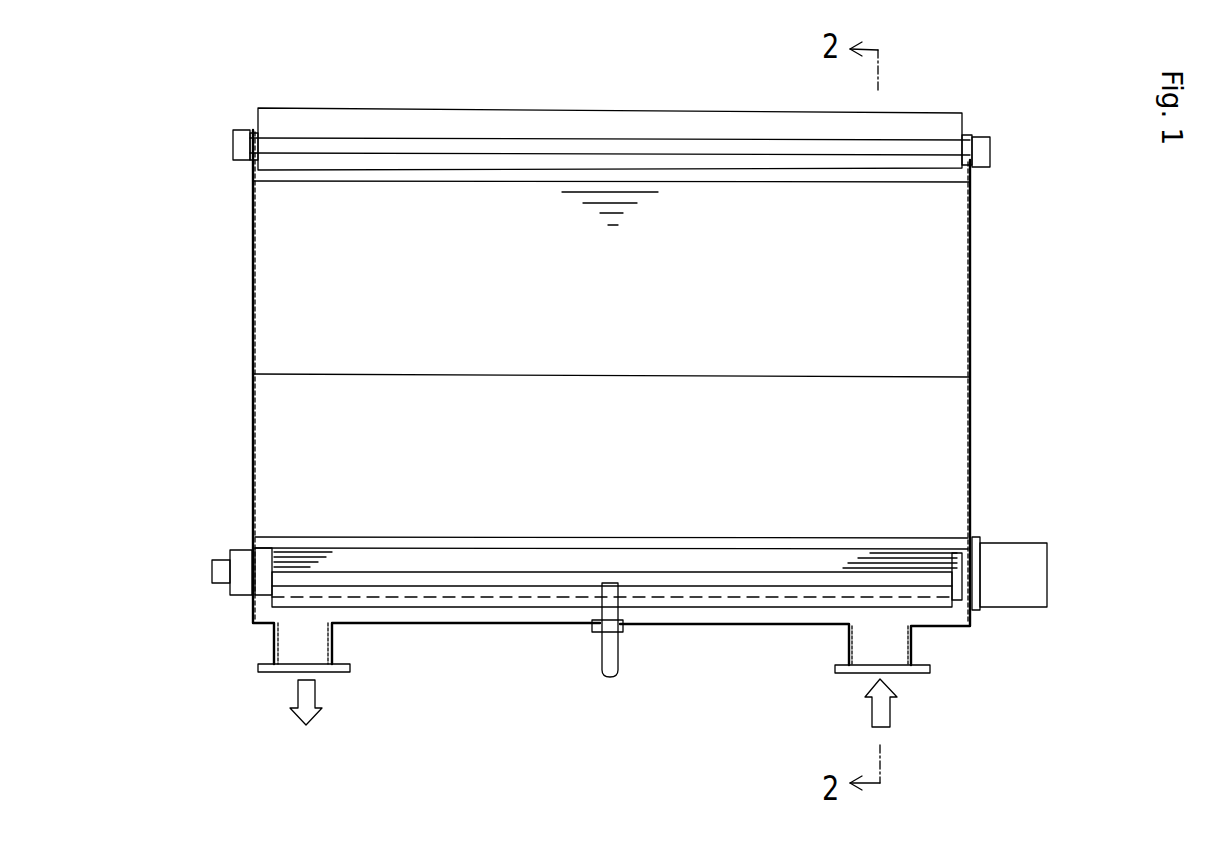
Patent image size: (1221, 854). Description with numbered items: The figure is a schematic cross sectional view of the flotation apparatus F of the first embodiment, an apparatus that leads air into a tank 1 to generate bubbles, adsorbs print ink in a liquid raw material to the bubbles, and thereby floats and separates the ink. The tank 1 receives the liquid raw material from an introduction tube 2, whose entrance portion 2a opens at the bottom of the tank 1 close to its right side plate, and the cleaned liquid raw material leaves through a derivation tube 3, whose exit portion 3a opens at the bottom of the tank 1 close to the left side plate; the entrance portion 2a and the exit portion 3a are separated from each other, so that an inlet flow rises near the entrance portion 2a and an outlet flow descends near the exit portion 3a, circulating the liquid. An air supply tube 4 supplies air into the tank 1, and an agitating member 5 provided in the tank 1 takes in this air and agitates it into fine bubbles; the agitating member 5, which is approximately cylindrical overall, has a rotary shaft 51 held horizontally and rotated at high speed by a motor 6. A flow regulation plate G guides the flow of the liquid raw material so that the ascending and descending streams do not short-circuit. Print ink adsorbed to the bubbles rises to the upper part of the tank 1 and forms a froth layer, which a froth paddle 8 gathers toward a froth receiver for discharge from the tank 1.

The tank 1 is at (970, 295).
The introduction tube 2 is at (917, 648).
The entrance portion 2a is at (870, 645).
The derivation tube 3 is at (272, 645).
The exit portion 3a is at (313, 640).
The air supply tube 4 is at (615, 658).
The agitating member 5 is at (880, 553).
The rotary shaft 51 is at (947, 550).
The motor 6 is at (1018, 557).
The froth paddle 8 is at (368, 143).
The flow regulation plate G is at (620, 415).
The flotation apparatus F is at (1022, 90).